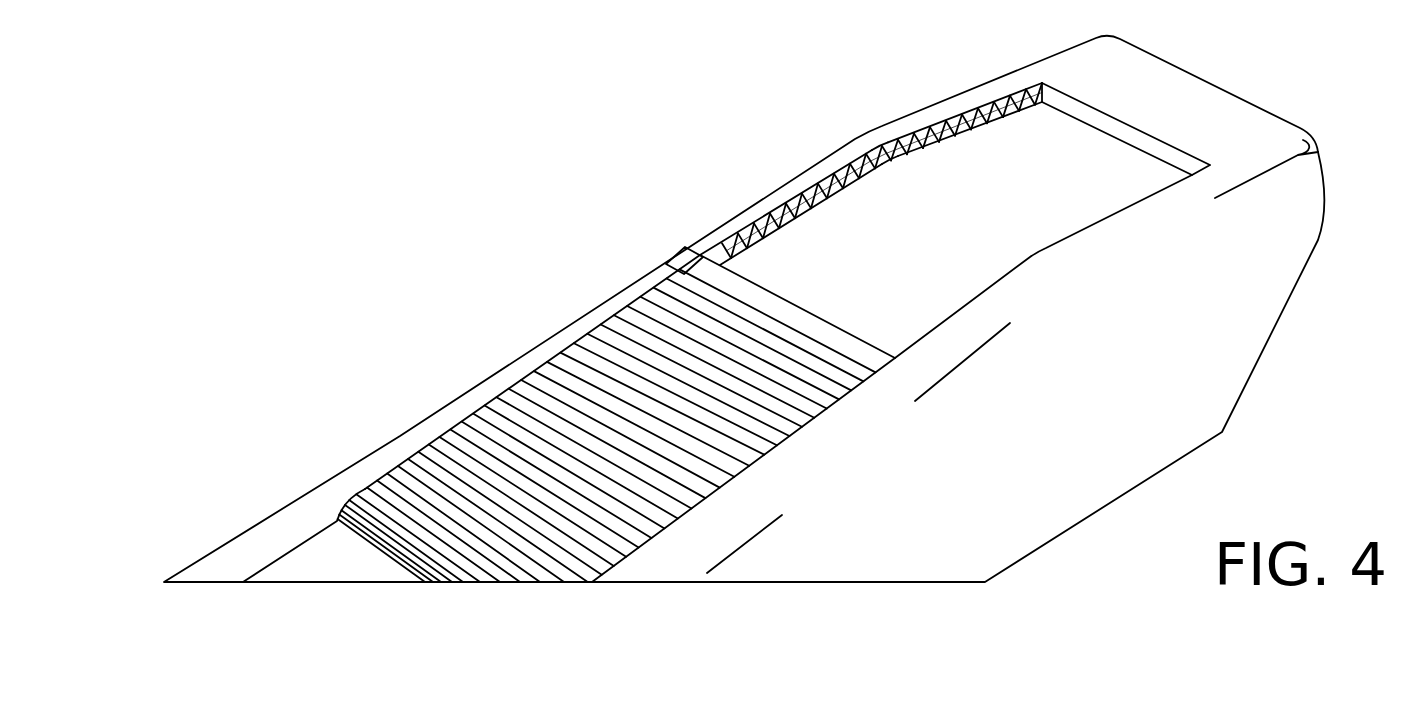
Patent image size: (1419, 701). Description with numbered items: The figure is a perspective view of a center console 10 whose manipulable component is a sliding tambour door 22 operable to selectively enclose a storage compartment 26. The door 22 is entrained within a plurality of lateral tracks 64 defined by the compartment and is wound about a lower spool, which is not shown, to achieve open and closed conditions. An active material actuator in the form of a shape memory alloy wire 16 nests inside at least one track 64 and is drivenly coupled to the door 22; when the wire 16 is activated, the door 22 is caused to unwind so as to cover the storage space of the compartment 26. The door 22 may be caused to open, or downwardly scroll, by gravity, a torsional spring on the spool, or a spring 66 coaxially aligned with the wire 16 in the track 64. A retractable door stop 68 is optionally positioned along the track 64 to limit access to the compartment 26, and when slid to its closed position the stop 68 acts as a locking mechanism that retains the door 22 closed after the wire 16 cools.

The center console 10 is at (456, 144).
The active material element 16 is at (772, 212).
The sliding tambour door 22 is at (644, 436).
The storage compartment 26 is at (1086, 436).
The lateral track 64 is at (947, 118).
The spring 66 is at (852, 147).
The retractable door stop 68 is at (683, 258).